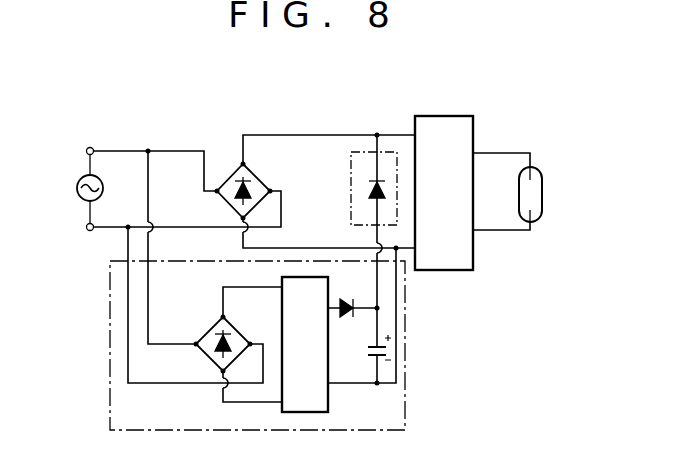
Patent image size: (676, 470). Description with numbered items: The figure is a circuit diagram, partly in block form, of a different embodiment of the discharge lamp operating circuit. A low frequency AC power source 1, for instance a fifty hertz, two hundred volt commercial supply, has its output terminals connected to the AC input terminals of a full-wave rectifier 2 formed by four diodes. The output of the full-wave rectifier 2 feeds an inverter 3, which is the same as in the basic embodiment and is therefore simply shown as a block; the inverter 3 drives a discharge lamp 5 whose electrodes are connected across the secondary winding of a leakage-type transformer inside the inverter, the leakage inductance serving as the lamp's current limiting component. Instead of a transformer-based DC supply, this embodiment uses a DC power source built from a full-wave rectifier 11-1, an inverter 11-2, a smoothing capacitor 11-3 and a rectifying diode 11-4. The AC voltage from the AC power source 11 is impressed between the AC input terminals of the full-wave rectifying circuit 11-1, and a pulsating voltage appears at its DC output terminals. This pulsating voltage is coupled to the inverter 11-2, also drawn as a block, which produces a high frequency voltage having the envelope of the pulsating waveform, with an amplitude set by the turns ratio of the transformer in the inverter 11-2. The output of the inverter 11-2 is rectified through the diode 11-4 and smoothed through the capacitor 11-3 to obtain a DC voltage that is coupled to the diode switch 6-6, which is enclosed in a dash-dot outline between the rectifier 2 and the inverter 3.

The low frequency AC power source 1 is at (79, 184).
The full-wave rectifier 2 is at (229, 179).
The inverter 3 is at (474, 136).
The discharge lamp 5 is at (543, 187).
The diode switch 6-6 is at (368, 188).
The AC power source 11 is at (110, 317).
The full-wave rectifier 11-1 is at (210, 328).
The inverter 11-2 is at (282, 323).
The smoothing capacitor 11-3 is at (368, 350).
The rectifying diode 11-4 is at (346, 298).